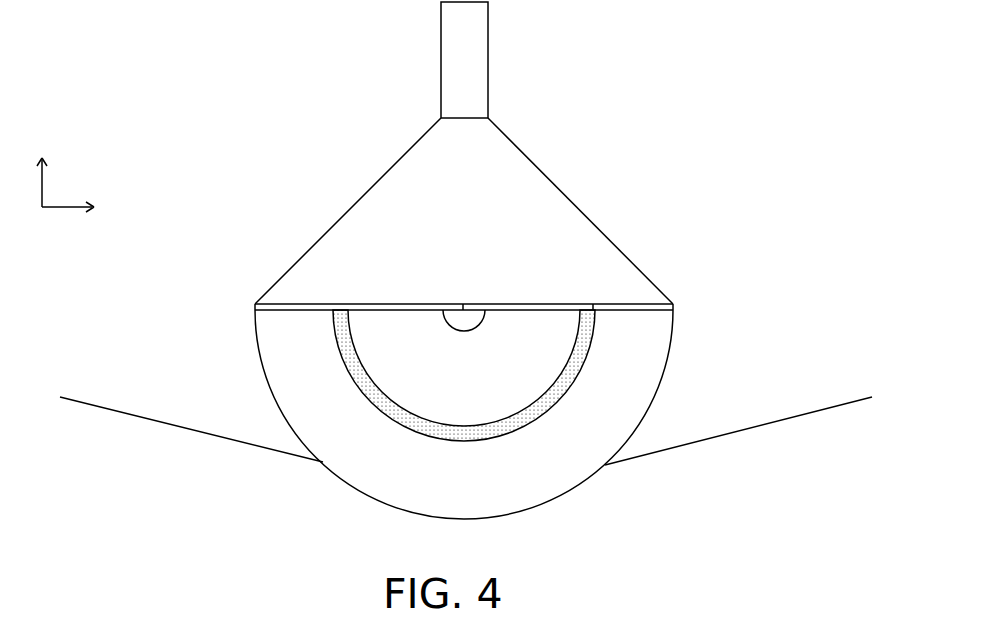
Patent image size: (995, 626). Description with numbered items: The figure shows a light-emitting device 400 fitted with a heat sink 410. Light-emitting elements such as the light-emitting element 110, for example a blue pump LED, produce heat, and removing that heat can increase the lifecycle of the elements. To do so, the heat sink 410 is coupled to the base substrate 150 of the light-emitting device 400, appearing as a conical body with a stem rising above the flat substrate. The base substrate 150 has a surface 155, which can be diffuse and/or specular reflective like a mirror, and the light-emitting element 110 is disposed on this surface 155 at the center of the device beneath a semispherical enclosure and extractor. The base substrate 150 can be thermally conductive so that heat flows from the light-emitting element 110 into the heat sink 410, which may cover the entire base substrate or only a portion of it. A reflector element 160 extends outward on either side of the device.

The light-emitting device 400 is at (78, 80).
The heat sink 410 is at (367, 226).
The base substrate 150 is at (308, 305).
The surface 155 is at (270, 312).
The light-emitting element 110 is at (473, 316).
The reflector element 160 is at (725, 433).